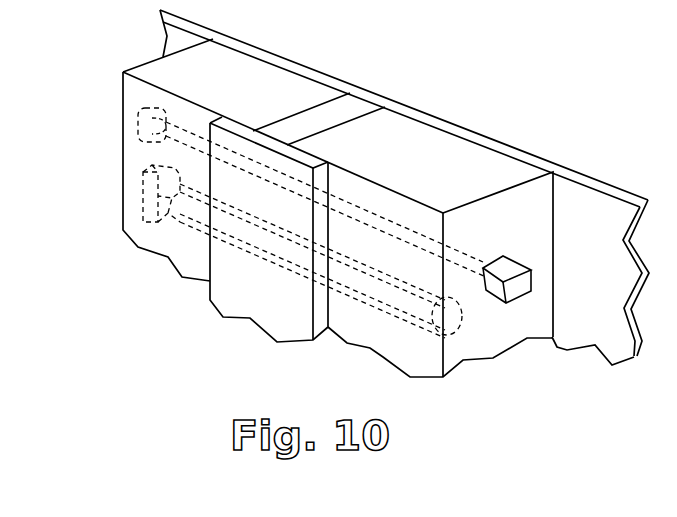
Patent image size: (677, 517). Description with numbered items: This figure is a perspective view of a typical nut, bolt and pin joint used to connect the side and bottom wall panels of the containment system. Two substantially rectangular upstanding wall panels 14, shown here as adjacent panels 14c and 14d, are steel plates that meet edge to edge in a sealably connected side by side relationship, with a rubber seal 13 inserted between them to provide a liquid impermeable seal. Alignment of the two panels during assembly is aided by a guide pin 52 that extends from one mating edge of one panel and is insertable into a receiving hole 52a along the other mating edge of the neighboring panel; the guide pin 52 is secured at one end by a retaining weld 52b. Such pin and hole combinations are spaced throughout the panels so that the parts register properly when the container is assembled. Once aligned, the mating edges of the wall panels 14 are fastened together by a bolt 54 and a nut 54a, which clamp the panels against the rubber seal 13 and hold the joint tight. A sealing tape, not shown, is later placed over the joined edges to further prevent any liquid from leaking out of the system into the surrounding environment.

The rubber seal 13 is at (363, 103).
The wall panel 14 is at (282, 54).
The wall panel 14c is at (253, 98).
The wall panel 14d is at (425, 167).
The guide pin 52 is at (240, 238).
The receiving hole 52a is at (432, 300).
The retaining weld 52b is at (130, 202).
The bolt 54 is at (518, 273).
The nut 54a is at (135, 117).